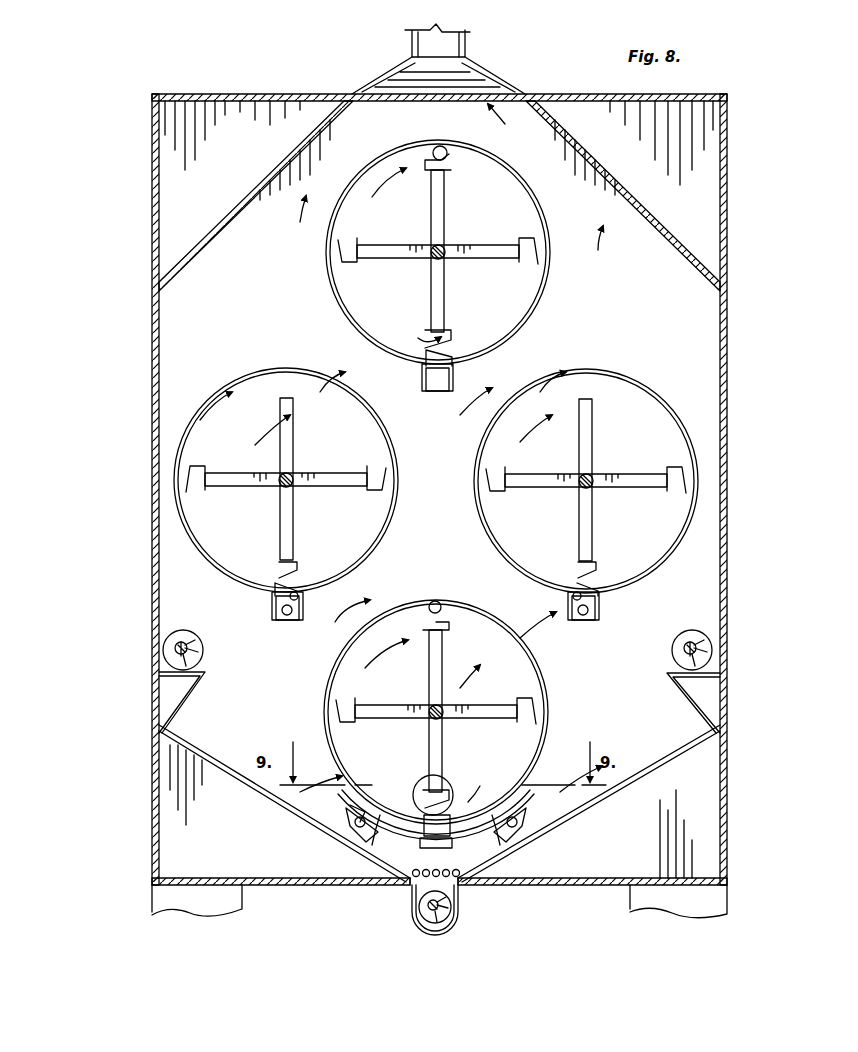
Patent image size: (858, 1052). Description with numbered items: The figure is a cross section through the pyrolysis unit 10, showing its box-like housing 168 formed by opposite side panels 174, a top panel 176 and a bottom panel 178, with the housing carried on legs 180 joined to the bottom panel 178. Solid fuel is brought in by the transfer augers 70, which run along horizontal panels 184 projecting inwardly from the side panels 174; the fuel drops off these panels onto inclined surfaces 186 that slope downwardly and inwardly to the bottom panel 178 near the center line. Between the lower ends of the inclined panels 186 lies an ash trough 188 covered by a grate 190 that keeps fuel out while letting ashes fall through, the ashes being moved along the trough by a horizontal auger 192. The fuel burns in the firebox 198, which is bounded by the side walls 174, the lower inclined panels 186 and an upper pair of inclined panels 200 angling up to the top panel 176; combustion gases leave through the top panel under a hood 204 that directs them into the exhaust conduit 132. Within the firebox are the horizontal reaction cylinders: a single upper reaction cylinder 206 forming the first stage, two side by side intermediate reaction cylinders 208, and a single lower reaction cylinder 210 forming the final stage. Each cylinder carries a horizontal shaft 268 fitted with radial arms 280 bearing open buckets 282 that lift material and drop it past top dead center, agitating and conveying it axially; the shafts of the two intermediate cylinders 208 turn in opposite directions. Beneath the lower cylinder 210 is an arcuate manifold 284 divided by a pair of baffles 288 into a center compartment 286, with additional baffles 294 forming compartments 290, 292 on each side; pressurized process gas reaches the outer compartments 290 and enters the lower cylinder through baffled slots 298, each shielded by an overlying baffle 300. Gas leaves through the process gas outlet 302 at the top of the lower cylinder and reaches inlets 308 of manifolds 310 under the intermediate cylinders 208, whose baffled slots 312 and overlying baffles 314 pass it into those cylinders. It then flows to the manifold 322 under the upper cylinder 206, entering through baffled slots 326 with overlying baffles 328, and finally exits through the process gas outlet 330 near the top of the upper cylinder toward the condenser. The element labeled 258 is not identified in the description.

The pyrolysis unit 10 is at (795, 188).
The transfer augers 70 is at (203, 652).
The exhaust conduit 132 is at (466, 45).
The housing 168 is at (730, 132).
The side panels 174 is at (152, 395).
The top panel 176 is at (262, 94).
The bottom panel 178 is at (592, 885).
The legs 180 is at (217, 910).
The horizontal panels 184 is at (208, 674).
The inclined surfaces 186 is at (262, 790).
The ash trough 188 is at (462, 904).
The grate 190 is at (412, 887).
The horizontal auger 192 is at (417, 912).
The firebox 198 is at (620, 710).
The inclined panels 200 is at (248, 197).
The hood 204 is at (505, 82).
The upper reaction cylinder 206 is at (547, 275).
The intermediate reaction cylinders 208 is at (262, 370).
The lower reaction cylinder 210 is at (383, 605).
The lower blade cap 258 is at (426, 796).
The horizontal shaft 268 is at (442, 248).
The arms 280 is at (430, 212).
The bucket 282 is at (452, 172).
The arcuate manifold 284 is at (350, 812).
The center compartment 286 is at (470, 800).
The baffles 288 is at (398, 862).
The outer compartments 290 is at (362, 846).
The compartments 292 is at (480, 812).
The baffles 294 is at (380, 814).
The baffled slots 298 is at (440, 838).
The baffle 300 is at (444, 790).
The process gas outlet 302 is at (440, 601).
The inlets 308 is at (287, 616).
The manifolds 310 is at (270, 607).
The baffled slots 312 is at (299, 597).
The baffle 314 is at (280, 586).
The manifold 322 is at (438, 391).
The baffled slots 326 is at (426, 360).
The baffle 328 is at (455, 345).
The process gas outlet 330 is at (440, 146).